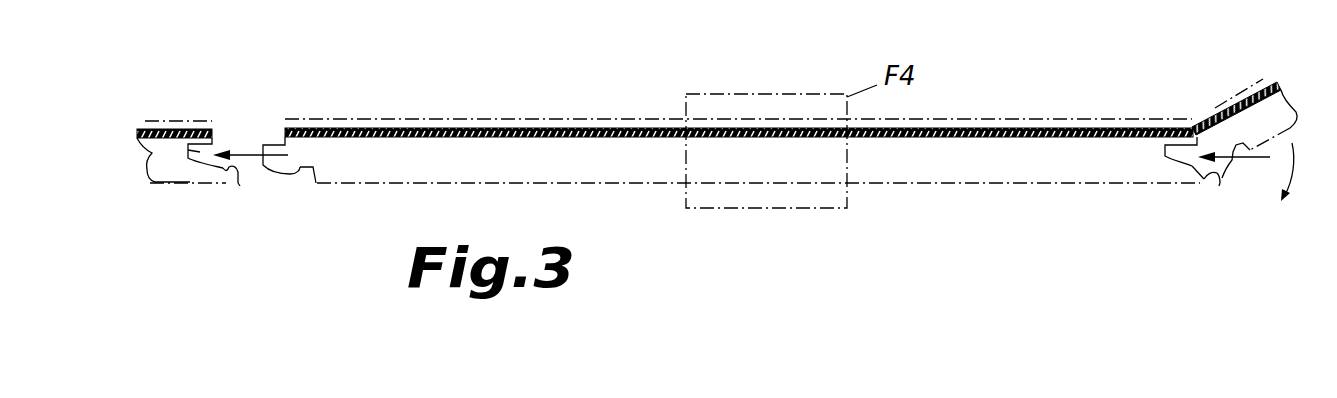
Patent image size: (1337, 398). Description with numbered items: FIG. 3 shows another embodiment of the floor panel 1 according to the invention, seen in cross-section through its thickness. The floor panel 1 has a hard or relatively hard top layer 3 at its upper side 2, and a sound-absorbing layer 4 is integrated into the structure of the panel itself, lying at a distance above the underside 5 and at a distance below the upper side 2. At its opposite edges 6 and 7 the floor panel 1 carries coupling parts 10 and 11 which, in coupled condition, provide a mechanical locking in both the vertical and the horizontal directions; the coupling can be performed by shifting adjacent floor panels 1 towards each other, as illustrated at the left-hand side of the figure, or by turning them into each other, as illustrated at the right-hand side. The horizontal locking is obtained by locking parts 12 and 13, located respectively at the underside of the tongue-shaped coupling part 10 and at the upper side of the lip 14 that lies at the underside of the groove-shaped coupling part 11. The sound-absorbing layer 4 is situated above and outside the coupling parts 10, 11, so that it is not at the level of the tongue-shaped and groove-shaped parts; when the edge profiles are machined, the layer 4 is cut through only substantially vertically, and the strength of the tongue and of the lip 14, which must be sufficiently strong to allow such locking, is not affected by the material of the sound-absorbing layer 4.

The floor panel 1 is at (637, 85).
The upper side 2 is at (1026, 113).
The top layer 3 is at (420, 118).
The sound-absorbing layer 4 is at (182, 134).
The underside 5 is at (1021, 188).
The edge 6 is at (290, 197).
The edge 7 is at (1226, 195).
The tongue-shaped coupling part 10 is at (277, 142).
The groove-shaped coupling part 11 is at (201, 157).
The locking part 12 is at (298, 173).
The locking part 13 is at (226, 172).
The lip 14 is at (240, 185).